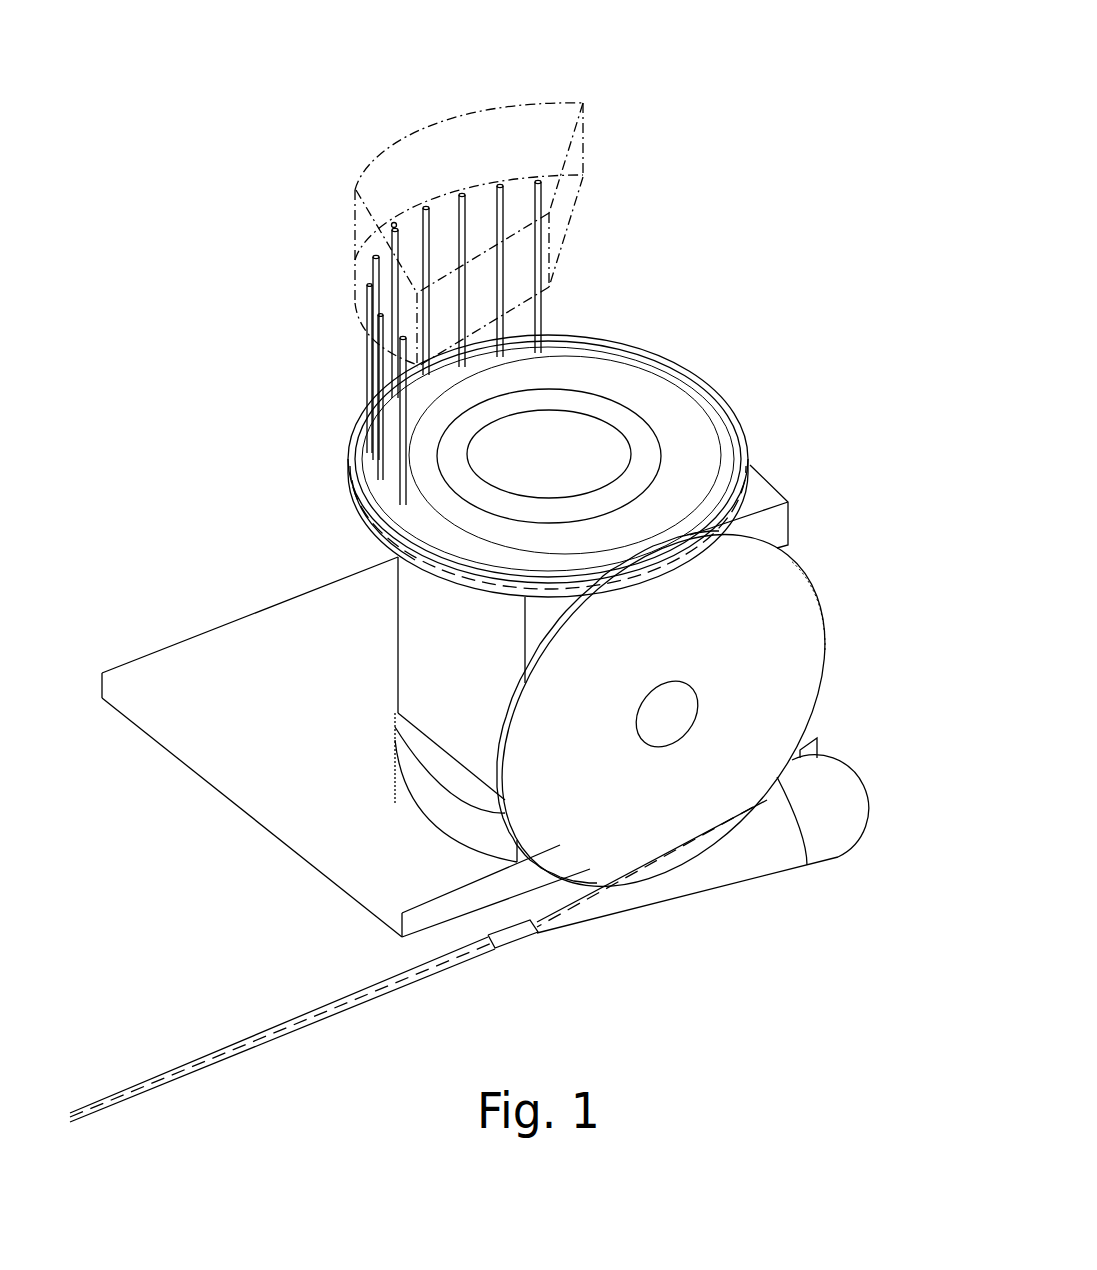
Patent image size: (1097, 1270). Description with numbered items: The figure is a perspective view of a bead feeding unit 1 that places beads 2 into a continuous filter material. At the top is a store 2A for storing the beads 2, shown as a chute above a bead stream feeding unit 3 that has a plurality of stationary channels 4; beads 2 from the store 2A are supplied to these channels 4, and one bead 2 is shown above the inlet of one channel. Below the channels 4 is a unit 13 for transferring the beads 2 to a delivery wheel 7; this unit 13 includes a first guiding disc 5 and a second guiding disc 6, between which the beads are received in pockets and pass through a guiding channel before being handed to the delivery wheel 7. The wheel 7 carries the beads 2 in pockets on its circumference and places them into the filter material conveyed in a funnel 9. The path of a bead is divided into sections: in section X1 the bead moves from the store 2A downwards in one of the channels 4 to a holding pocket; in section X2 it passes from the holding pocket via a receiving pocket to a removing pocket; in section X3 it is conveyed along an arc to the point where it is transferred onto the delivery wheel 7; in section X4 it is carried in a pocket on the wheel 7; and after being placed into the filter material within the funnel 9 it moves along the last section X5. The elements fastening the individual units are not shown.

The bead feeding unit 1 is at (708, 217).
The bead 2 is at (391, 223).
The store 2A is at (546, 113).
The bead stream feeding unit 3 is at (312, 355).
The channels 4 is at (458, 212).
The first guiding disc 5 is at (378, 482).
The second guiding disc 6 is at (360, 457).
The delivery wheel 7 is at (697, 711).
The funnel 9 is at (753, 862).
The unit for transferring the beads 13 is at (447, 466).
The section of the distance X1 is at (376, 388).
The section of the distance X2 is at (358, 484).
The section of the distance X3 is at (467, 570).
The section of the distance X4 is at (830, 634).
The section of the distance X5 is at (247, 1033).